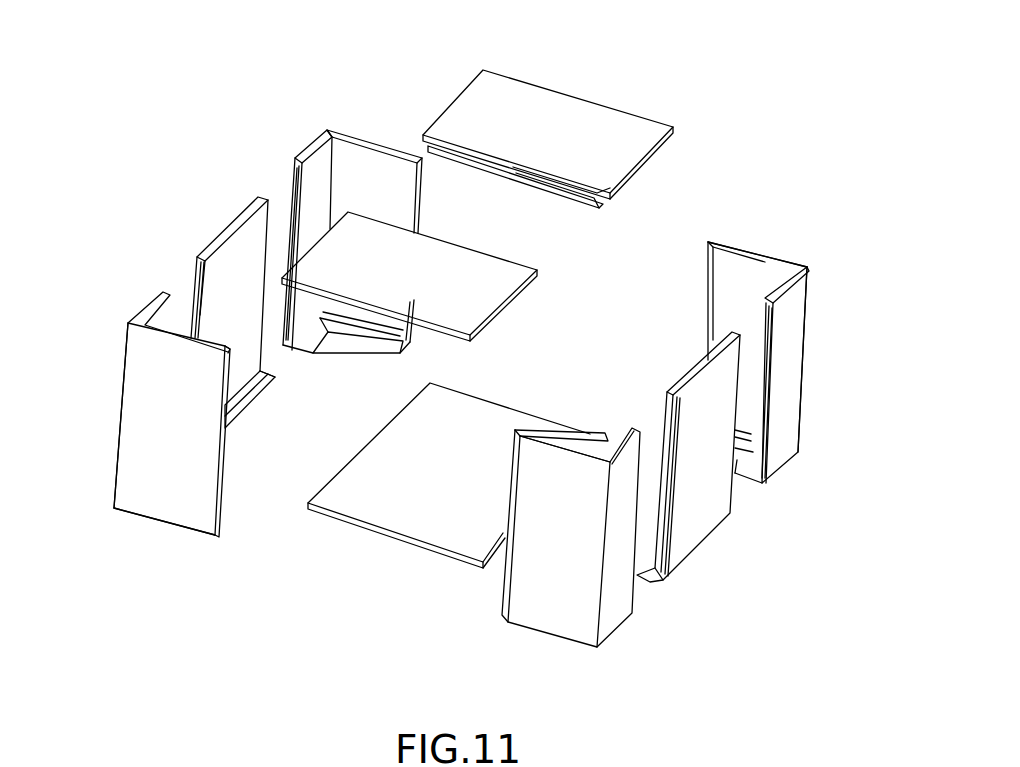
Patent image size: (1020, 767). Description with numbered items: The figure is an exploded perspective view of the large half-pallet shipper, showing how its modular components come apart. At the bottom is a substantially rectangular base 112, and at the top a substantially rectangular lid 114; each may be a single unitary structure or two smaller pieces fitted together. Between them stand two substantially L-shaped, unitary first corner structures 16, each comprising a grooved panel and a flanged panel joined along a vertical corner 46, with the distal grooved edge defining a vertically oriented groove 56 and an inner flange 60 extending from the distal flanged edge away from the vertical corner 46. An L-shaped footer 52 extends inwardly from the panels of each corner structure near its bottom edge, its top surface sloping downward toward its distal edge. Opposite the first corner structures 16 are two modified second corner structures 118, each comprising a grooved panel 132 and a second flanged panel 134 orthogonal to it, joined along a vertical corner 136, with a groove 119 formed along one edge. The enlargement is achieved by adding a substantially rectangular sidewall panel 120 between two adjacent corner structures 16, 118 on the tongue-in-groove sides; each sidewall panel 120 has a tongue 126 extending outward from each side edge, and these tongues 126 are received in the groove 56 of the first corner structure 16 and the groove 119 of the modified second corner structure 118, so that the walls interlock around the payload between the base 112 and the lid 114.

The first corner structure 16 is at (362, 160).
The vertical corner 46 is at (600, 590).
The L-shaped footer 52 is at (266, 383).
The vertically oriented groove 56 is at (292, 196).
The inner flange 60 is at (420, 210).
The base 112 is at (418, 500).
The lid 114 is at (587, 138).
The modified second corner structure 118 is at (162, 488).
The groove 119 is at (771, 407).
The sidewall panel 120 is at (232, 230).
The tongue 126 is at (193, 283).
The grooved panel 132 is at (147, 310).
The second flanged panel 134 is at (196, 507).
The vertical corner 136 is at (122, 413).